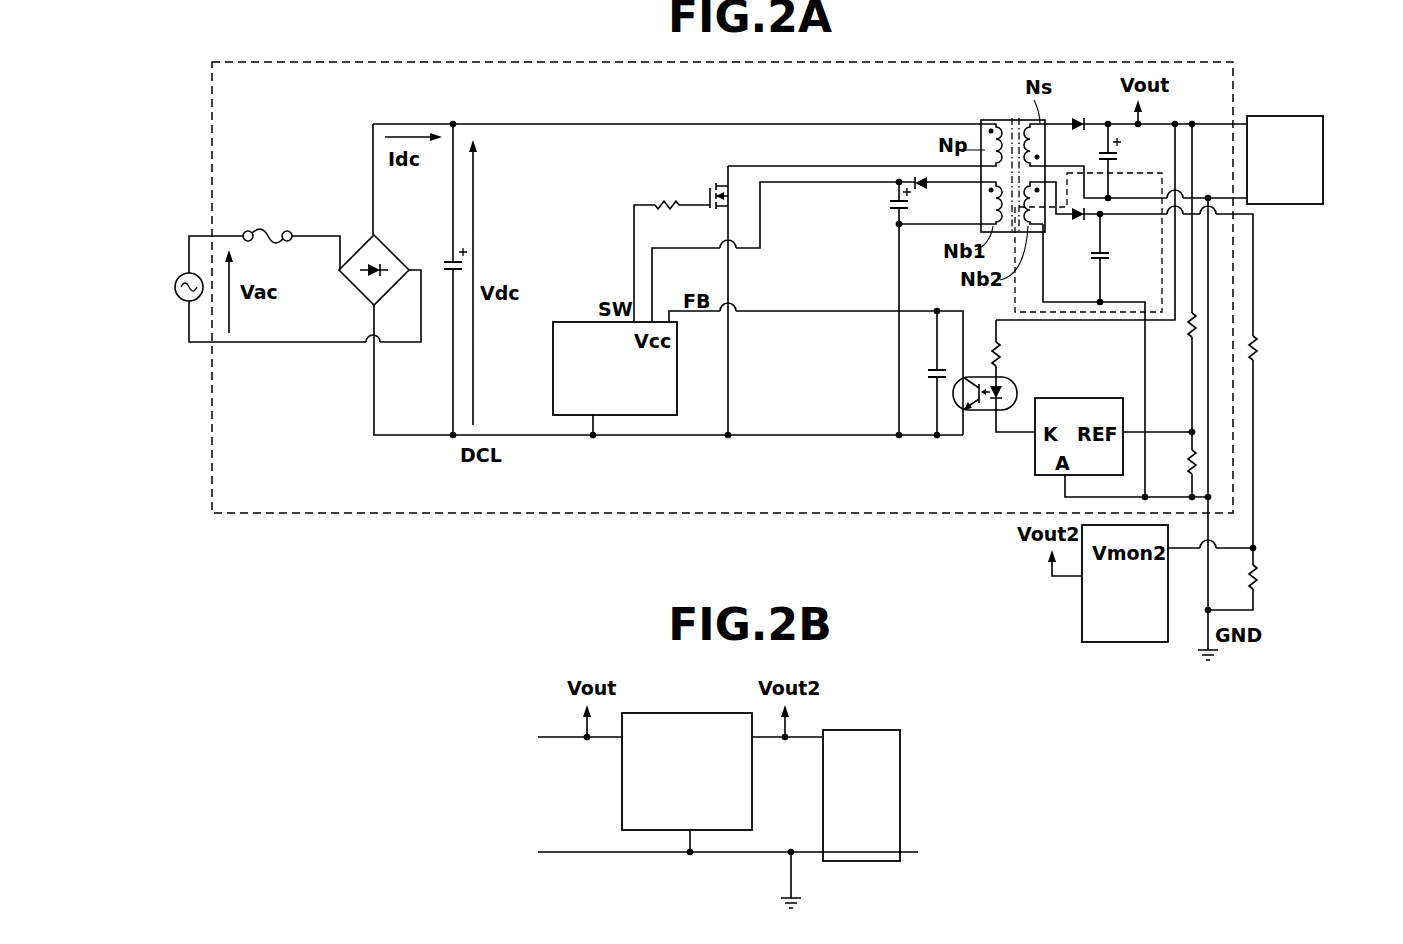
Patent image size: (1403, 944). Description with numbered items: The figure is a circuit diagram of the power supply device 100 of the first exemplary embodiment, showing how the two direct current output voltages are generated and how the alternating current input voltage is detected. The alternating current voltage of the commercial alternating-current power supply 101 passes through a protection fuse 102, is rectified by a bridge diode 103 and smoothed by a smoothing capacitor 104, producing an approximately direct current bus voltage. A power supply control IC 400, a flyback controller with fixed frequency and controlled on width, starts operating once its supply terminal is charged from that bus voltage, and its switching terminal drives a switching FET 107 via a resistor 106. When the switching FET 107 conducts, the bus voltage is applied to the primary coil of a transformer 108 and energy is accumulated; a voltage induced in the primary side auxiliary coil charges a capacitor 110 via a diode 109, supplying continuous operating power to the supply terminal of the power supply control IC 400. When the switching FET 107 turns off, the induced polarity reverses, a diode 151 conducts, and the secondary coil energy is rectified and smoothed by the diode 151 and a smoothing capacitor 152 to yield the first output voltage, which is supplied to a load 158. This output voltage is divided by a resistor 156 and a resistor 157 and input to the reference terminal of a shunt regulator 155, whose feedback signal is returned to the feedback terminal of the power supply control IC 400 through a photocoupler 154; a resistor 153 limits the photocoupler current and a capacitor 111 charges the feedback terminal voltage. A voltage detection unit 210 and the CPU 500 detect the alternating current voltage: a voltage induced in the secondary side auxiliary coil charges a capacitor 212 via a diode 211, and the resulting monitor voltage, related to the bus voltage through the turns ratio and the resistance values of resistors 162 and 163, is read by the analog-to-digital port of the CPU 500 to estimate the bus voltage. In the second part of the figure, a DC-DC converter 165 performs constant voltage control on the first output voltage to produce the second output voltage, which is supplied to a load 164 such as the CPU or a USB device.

In FIG. 2A, the power supply device 100 is at (306, 61).
In FIG. 2A, the commercial alternating-current power supply 101 is at (187, 273).
In FIG. 2A, the fuse 102 is at (272, 236).
In FIG. 2A, the bridge diode 103 is at (355, 250).
In FIG. 2A, the smoothing capacitor 104 is at (446, 262).
In FIG. 2A, the resistor 106 is at (665, 203).
In FIG. 2A, the switching field-effect transistor 107 is at (718, 190).
In FIG. 2A, the transformer 108 is at (990, 120).
In FIG. 2A, the diode 109 is at (918, 180).
In FIG. 2A, the capacitor 110 is at (890, 206).
In FIG. 2A, the capacitor 111 is at (928, 374).
In FIG. 2A, the diode 151 is at (1078, 120).
In FIG. 2A, the smoothing capacitor 152 is at (1118, 158).
In FIG. 2A, the resistor 153 is at (1000, 356).
In FIG. 2A, the photocoupler 154 is at (1003, 389).
In FIG. 2A, the shunt regulator 155 is at (1035, 466).
In FIG. 2A, the resistor 156 is at (1196, 318).
In FIG. 2A, the resistor 157 is at (1196, 462).
In FIG. 2A, the load 158 is at (1288, 116).
In FIG. 2A, the resistor 162 is at (1258, 347).
In FIG. 2A, the resistor 163 is at (1258, 573).
In FIG. 2A, the voltage detection unit 210 is at (1118, 312).
In FIG. 2A, the diode 211 is at (1079, 220).
In FIG. 2A, the capacitor 212 is at (1110, 257).
In FIG. 2A, the power supply control IC 400 is at (553, 380).
In FIG. 2A, the CPU 500 is at (1082, 618).
In FIG. 2B, the load 164 is at (858, 730).
In FIG. 2B, the DC-DC converter 165 is at (683, 713).